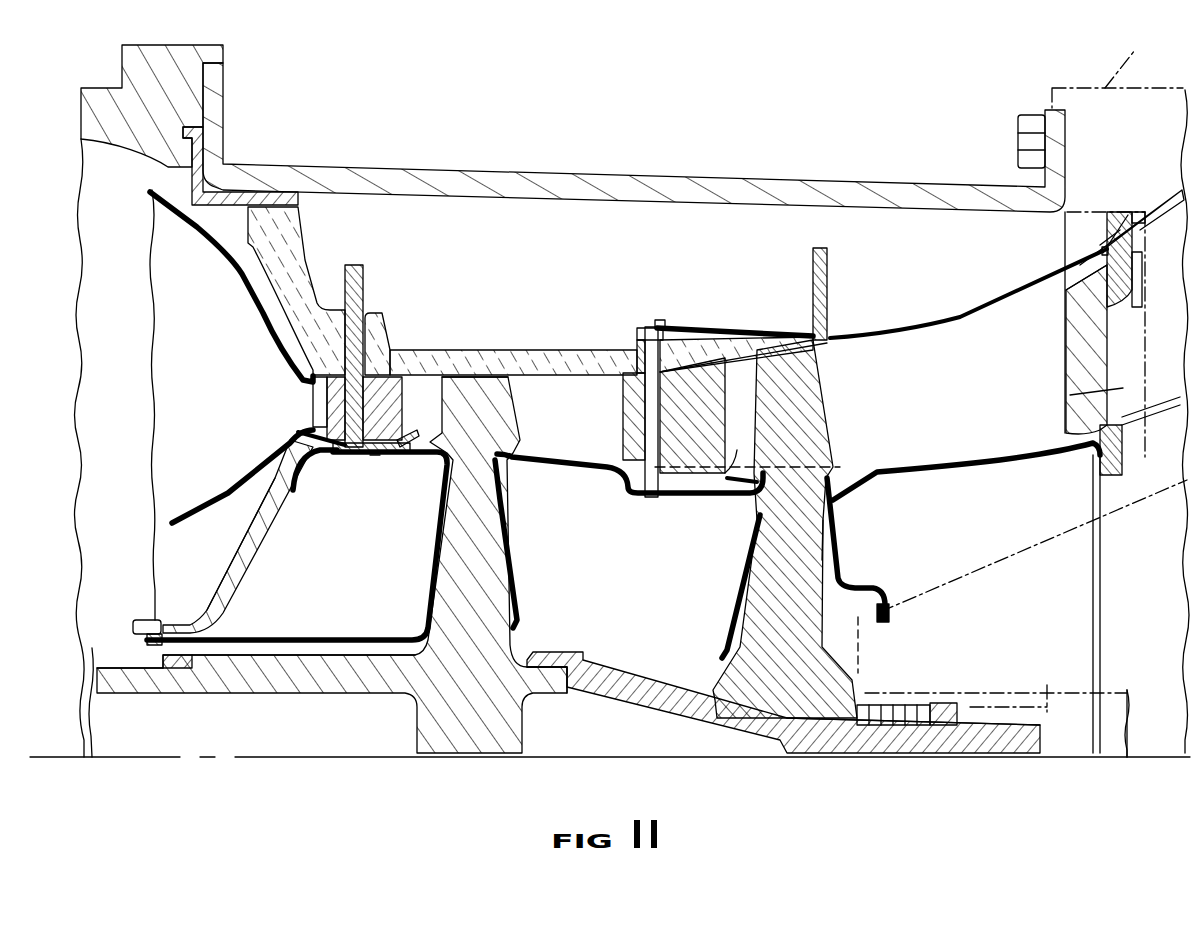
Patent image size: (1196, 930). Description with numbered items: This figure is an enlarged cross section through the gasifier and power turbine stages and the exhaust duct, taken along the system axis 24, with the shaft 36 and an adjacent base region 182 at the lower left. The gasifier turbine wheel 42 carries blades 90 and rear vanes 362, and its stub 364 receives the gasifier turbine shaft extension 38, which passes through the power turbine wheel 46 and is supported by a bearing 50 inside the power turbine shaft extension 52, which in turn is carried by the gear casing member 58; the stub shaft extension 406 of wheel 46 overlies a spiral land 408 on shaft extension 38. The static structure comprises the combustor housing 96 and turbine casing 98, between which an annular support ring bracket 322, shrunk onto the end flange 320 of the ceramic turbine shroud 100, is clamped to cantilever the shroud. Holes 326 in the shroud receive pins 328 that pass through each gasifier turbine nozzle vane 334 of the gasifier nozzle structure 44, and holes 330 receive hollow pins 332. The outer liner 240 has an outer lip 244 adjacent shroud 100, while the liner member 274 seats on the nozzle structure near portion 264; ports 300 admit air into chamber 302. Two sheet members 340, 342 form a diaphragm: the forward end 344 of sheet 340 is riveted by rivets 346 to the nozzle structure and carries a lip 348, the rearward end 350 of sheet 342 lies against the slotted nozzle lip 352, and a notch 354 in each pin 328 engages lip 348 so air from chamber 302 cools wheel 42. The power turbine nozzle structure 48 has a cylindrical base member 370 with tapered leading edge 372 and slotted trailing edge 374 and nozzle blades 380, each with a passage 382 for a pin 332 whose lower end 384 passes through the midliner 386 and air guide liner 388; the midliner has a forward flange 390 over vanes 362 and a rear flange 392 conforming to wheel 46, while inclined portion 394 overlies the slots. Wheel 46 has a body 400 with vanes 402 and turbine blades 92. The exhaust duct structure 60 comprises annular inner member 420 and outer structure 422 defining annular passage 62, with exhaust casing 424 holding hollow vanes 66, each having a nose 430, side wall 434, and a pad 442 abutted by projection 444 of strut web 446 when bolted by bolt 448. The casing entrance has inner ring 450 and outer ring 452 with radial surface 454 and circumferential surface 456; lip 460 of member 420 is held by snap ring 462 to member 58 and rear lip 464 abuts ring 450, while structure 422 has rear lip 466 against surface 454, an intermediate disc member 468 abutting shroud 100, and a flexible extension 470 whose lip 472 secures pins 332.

The axis 24 is at (360, 757).
The shaft 36 is at (380, 686).
The gasifier turbine shaft extension 38 is at (608, 668).
The gasifier turbine wheel 42 is at (510, 640).
The gasifier nozzle structure 44 is at (385, 390).
The power turbine wheel 46 is at (840, 475).
The power turbine nozzle structure 48 is at (690, 388).
The bearing 50 is at (1050, 700).
The power turbine shaft extension 52 is at (1022, 690).
The gear casing member 58 is at (1008, 552).
The exhaust duct structure 60 is at (1045, 80).
The annular passage 62 is at (940, 407).
The hollow vane 66 is at (1133, 60).
The blades 90 is at (475, 393).
The turbine blades 92 is at (805, 402).
The combustor housing 96 is at (103, 90).
The turbine casing 98 is at (475, 165).
The turbine shroud 100 is at (435, 352).
The base plate 182 is at (180, 692).
The outer liner element 240 is at (240, 257).
The outer lip 244 is at (300, 378).
The portion of gasifier nozzle structure 264 is at (268, 521).
The fourth combustor liner member 274 is at (237, 490).
The ports 300 is at (227, 583).
The chamber 302 is at (330, 599).
The end flange 320 is at (305, 238).
The annular support ring bracket 322 is at (232, 188).
The holes 326 is at (366, 298).
The pins 328 is at (363, 270).
The holes 330 is at (637, 347).
The pins 332 is at (645, 330).
The gasifier turbine nozzle vane 334 is at (320, 404).
The sheet member 340 is at (430, 557).
The sheet member 342 is at (375, 462).
The forward end 344 is at (147, 640).
The rivets 346 is at (147, 617).
The lip 348 is at (320, 463).
The rearward end 350 is at (427, 462).
The nozzle lip 352 is at (410, 440).
The notch 354 is at (310, 426).
The vanes 362 is at (515, 568).
The stub 364 is at (548, 682).
The cylindrical base member 370 is at (583, 460).
The tapered leading edge 372 is at (545, 458).
The tapered trailing edge 374 is at (735, 466).
The nozzle blades 380 is at (720, 390).
The passage 382 is at (668, 476).
The lower end 384 is at (645, 497).
The midliner 386 is at (556, 473).
The air guide liner 388 is at (690, 497).
The forward flange 390 is at (507, 512).
The rear flange 392 is at (746, 561).
The inclined portion 394 is at (732, 482).
The body 400 is at (807, 627).
The vanes 402 is at (730, 641).
The stub shaft extension 406 is at (953, 707).
The spiral land 408 is at (872, 725).
The annular inner member 420 is at (970, 472).
The annular outer structure 422 is at (956, 318).
The exhaust casing 424 is at (1162, 192).
The nose 430 is at (1066, 358).
The side wall 434 is at (1070, 395).
The pad 442 is at (1072, 300).
The projection 444 is at (1109, 272).
The strut web 446 is at (1125, 393).
The bolt 448 is at (1018, 135).
The inner ring 450 is at (1123, 460).
The outer ring 452 is at (1112, 232).
The radial surface 454 is at (1110, 225).
The circumferential surface 456 is at (1118, 215).
The lip 460 is at (887, 607).
The snap ring 462 is at (870, 610).
The rear lip 464 is at (1090, 448).
The rear lip 466 is at (1102, 252).
The intermediate disc member 468 is at (828, 338).
The flexible extension 470 is at (720, 328).
The lip 472 is at (660, 320).